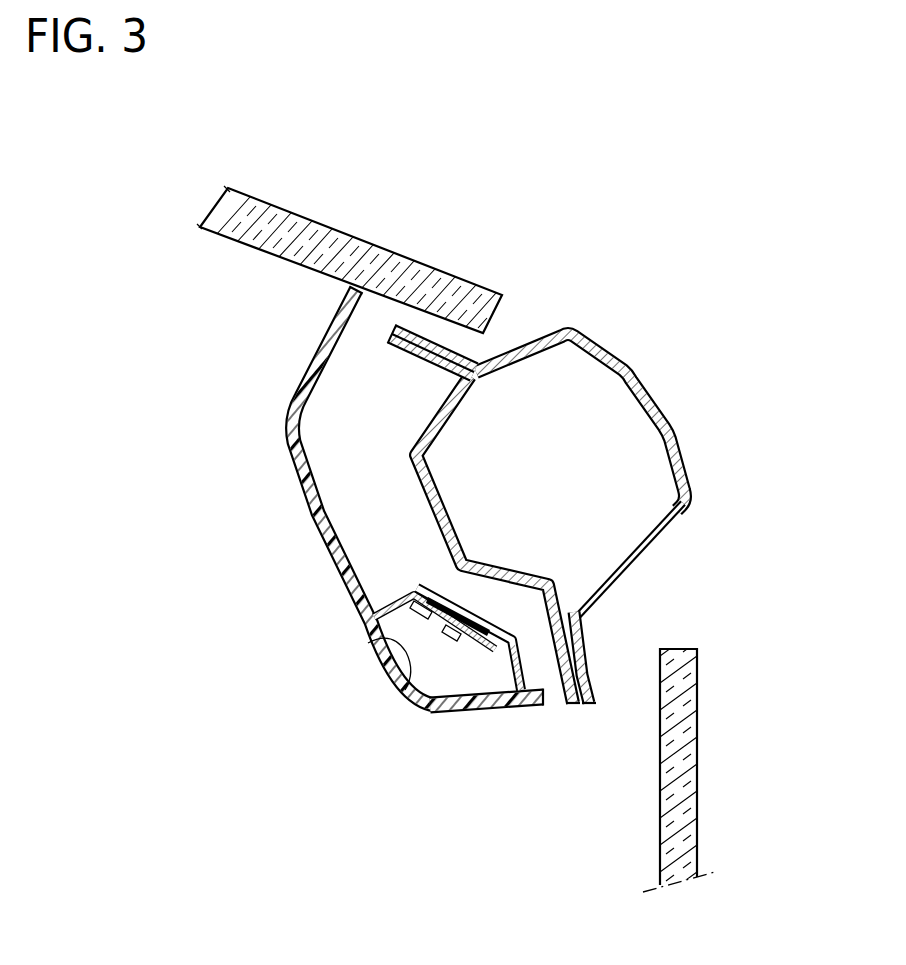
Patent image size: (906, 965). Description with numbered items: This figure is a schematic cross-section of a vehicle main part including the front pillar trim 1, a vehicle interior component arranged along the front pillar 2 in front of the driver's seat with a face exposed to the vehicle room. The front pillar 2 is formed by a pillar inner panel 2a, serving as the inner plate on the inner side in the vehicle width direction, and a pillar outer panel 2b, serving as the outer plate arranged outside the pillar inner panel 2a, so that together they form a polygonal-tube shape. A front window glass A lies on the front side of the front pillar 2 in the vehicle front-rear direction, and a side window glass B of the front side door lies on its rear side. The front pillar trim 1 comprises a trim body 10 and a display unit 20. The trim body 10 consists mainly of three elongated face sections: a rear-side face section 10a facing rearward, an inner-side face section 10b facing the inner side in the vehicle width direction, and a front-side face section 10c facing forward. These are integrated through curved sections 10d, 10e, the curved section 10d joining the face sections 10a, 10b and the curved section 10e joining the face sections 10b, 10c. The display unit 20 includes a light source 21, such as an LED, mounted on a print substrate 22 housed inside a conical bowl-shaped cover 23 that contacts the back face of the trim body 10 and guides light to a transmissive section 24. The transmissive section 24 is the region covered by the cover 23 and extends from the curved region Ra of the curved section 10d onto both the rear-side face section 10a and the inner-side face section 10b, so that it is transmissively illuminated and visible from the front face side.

The front pillar trim 1 is at (237, 352).
The front pillar 2 is at (573, 440).
The pillar inner panel 2a is at (434, 423).
The pillar outer panel 2b is at (672, 430).
The trim body 10 is at (328, 559).
The first face section (rear-side face section) 10a is at (510, 712).
The second face section (inner-side face section) 10b is at (342, 573).
The third face section (front-side face section) 10c is at (329, 324).
The curved section 10d is at (414, 710).
The curved section 10e is at (287, 417).
The display unit 20 is at (461, 572).
The light source 21 is at (449, 638).
The print substrate 22 is at (419, 601).
The cover 23 is at (510, 636).
The transmissive section 24 is at (368, 643).
The front window glass A is at (300, 218).
The side window glass B is at (697, 690).
The curved region Ra is at (399, 702).